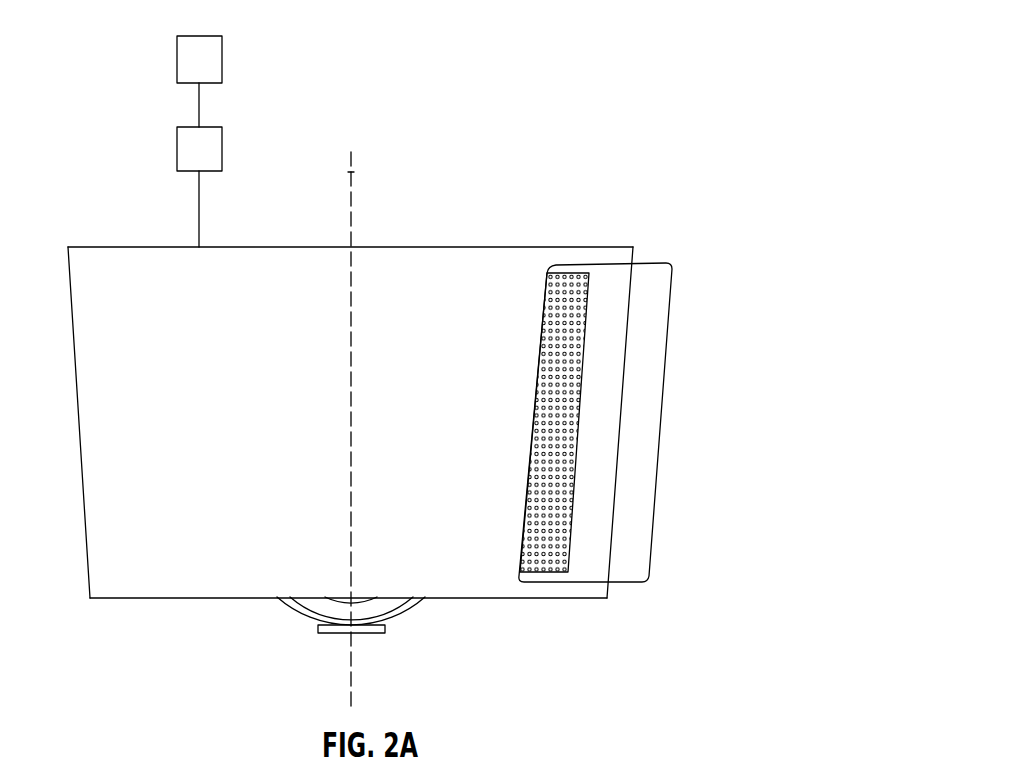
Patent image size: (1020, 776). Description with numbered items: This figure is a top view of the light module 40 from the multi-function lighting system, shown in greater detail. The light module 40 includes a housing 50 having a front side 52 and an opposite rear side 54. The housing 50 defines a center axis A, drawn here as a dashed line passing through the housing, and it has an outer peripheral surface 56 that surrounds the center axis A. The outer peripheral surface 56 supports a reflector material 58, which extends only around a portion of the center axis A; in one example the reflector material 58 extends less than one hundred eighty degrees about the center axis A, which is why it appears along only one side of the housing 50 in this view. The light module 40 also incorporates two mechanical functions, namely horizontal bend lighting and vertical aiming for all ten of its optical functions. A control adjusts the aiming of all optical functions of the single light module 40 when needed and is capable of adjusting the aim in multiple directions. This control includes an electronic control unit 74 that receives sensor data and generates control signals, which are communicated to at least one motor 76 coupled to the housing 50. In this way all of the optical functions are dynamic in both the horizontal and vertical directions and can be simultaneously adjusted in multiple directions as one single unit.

The light module 40 is at (283, 238).
The housing 50 is at (321, 418).
The front side 52 is at (192, 600).
The rear side 54 is at (110, 247).
The outer peripheral surface 56 is at (418, 318).
The reflector material 58 is at (670, 300).
The electronic control unit 74 is at (177, 60).
The motor 76 is at (177, 150).
The center axis A is at (353, 172).